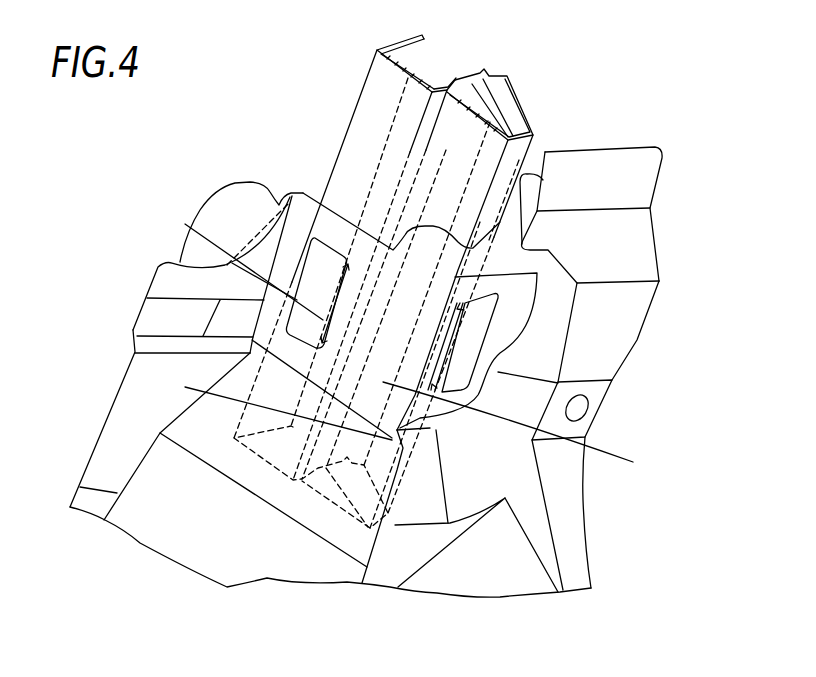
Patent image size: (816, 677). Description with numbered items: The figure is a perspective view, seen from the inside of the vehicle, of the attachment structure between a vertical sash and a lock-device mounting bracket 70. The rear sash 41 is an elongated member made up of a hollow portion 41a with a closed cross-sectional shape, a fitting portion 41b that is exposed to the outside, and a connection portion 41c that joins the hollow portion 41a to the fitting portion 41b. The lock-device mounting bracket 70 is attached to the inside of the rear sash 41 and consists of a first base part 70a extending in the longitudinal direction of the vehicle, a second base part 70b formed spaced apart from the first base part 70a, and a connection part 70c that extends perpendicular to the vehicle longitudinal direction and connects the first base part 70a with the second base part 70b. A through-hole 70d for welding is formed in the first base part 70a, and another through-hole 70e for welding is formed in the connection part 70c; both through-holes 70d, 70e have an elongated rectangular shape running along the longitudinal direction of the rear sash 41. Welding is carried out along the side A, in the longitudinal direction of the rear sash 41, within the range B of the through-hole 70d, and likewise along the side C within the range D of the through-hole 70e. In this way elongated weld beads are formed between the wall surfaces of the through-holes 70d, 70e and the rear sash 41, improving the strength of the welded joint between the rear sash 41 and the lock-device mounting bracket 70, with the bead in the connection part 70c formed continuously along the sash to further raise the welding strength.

The rear sash 41 is at (556, 5).
The hollow portion 41a is at (514, 85).
The fitting portion 41b is at (404, 40).
The connection portion 41c is at (430, 76).
The lock-device mounting bracket 70 is at (675, 420).
The first base part 70a is at (600, 365).
The second base part 70b is at (430, 428).
The connection part 70c is at (524, 427).
The through-hole for welding 70d is at (480, 317).
The through-hole for welding 70e is at (317, 262).
The side A is at (463, 335).
The range B is at (447, 346).
The side C is at (244, 268).
The range D is at (335, 303).